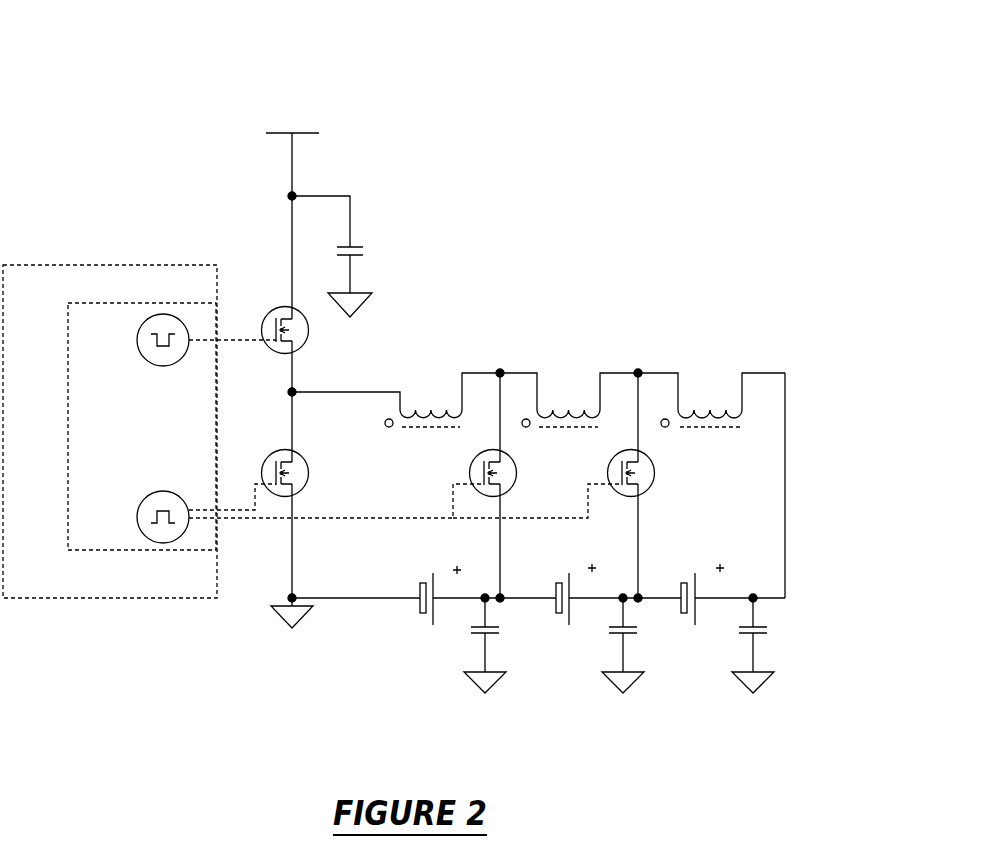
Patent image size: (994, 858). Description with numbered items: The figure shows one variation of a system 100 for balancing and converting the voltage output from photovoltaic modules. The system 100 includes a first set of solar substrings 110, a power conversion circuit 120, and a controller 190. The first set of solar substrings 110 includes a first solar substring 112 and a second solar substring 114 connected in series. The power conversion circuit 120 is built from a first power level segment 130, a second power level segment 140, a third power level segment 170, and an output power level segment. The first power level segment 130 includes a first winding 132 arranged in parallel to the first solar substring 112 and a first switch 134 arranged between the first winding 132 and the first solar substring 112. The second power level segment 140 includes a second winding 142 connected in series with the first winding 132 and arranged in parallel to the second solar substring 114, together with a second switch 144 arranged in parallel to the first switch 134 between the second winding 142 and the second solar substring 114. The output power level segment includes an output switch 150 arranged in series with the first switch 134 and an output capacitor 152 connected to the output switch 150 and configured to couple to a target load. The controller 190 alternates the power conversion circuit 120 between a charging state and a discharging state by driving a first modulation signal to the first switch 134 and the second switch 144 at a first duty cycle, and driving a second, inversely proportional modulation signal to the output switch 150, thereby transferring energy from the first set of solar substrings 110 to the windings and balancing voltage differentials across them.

The system 100 is at (136, 58).
The controller 190 is at (46, 264).
The output switch 150 is at (273, 310).
The output capacitor 152 is at (356, 246).
The first switch 134 is at (282, 450).
The second switch 144 is at (470, 448).
The second winding 142 is at (565, 400).
The power conversion circuit 120 is at (656, 373).
The first winding 132 is at (403, 428).
The first power level segment 130 is at (503, 520).
The second power level segment 140 is at (641, 510).
The third power level segment 170 is at (786, 497).
The first solar substring 112 is at (421, 615).
The second solar substring 114 is at (558, 615).
The first set of solar substrings 110 is at (683, 615).